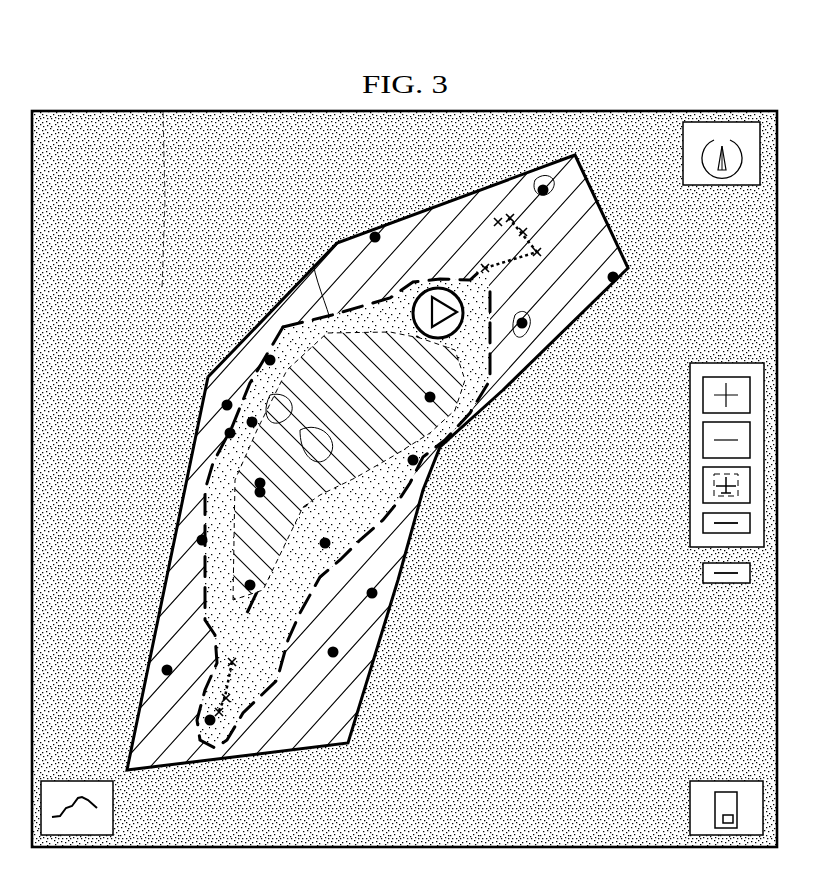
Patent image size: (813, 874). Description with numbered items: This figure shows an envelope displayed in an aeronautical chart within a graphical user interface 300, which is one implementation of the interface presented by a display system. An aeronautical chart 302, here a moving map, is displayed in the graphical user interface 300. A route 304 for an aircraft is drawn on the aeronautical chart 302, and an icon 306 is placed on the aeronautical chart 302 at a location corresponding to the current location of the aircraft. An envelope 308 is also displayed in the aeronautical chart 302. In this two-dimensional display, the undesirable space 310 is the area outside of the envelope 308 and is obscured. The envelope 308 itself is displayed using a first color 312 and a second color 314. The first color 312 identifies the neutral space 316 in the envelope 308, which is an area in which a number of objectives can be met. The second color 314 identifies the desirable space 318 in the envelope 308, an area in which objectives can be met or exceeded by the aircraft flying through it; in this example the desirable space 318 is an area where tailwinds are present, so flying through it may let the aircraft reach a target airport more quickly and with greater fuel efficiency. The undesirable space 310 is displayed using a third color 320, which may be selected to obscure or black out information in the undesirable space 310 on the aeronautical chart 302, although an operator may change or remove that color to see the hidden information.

The graphical user interface 300 is at (202, 60).
The aeronautical chart 302 is at (561, 106).
The route 304 is at (406, 437).
The icon 306 is at (436, 288).
The envelope 308 is at (543, 185).
The undesirable space 310 is at (224, 196).
The first color 312 is at (256, 755).
The second color 314 is at (493, 388).
The neutral space 316 is at (552, 242).
The desirable space 318 is at (231, 649).
The third color 320 is at (77, 470).